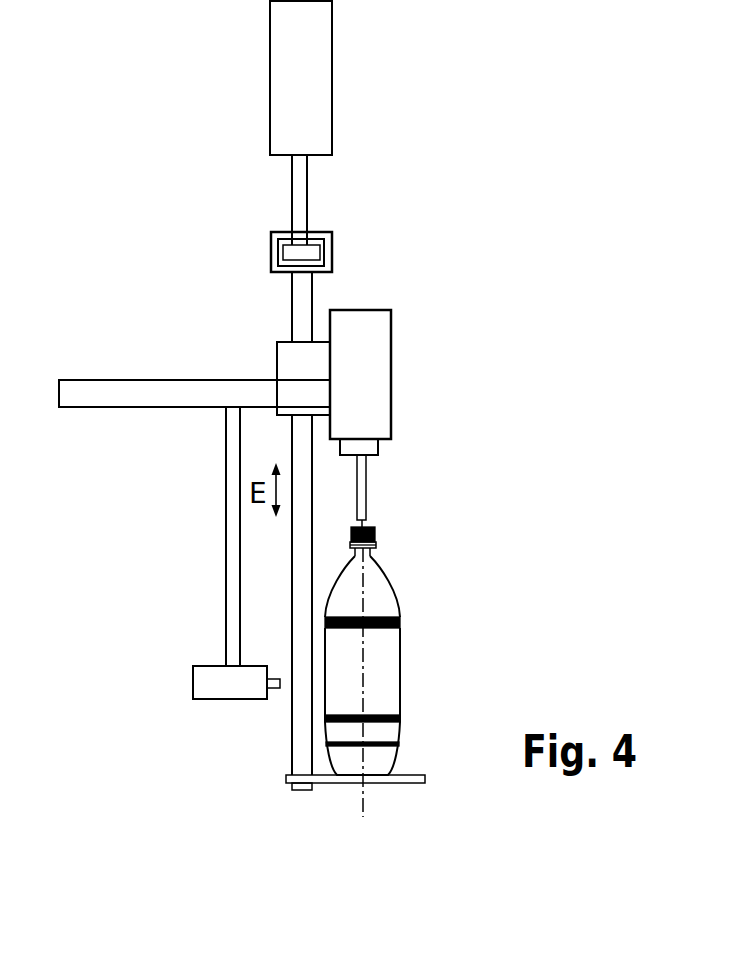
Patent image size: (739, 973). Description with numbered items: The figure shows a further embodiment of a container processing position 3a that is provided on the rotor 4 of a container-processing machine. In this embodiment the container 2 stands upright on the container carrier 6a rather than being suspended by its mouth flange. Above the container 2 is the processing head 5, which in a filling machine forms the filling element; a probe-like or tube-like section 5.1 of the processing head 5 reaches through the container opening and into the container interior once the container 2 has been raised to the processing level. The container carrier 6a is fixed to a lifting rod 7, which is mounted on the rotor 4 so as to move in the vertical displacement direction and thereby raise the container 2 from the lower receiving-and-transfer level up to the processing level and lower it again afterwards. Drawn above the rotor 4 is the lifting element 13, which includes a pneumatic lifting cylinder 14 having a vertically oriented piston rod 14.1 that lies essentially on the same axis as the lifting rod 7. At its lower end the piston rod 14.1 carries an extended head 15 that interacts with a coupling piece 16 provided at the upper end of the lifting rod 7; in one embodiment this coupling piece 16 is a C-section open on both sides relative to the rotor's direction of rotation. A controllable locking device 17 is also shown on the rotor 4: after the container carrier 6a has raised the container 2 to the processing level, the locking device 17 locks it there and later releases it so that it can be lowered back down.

The lifting element 13 is at (240, 82).
The pneumatic lifting cylinder 14 is at (316, 90).
The piston rod 14.1 is at (299, 195).
The extended head 15 is at (290, 250).
The coupling piece 16 is at (272, 265).
The lifting rod 7 is at (300, 532).
The rotor 4 is at (127, 388).
The controllable locking device 17 is at (198, 697).
The container processing position 3a is at (516, 365).
The processing head 5 is at (375, 347).
The probe-like or tube-like section 5.1 is at (366, 485).
The container 2 is at (392, 670).
The container carrier 6a is at (415, 785).